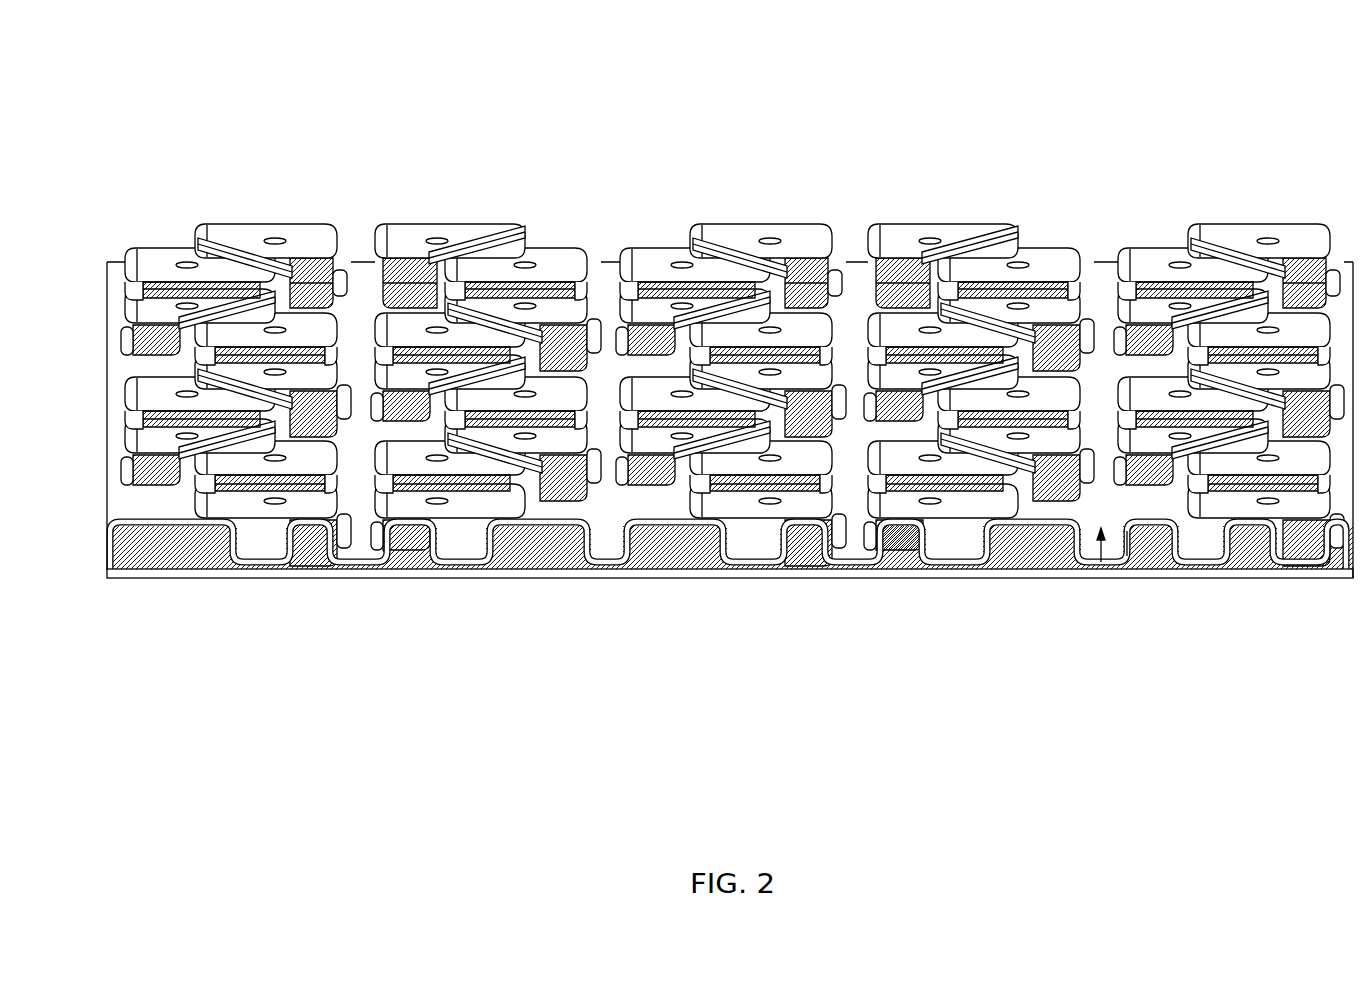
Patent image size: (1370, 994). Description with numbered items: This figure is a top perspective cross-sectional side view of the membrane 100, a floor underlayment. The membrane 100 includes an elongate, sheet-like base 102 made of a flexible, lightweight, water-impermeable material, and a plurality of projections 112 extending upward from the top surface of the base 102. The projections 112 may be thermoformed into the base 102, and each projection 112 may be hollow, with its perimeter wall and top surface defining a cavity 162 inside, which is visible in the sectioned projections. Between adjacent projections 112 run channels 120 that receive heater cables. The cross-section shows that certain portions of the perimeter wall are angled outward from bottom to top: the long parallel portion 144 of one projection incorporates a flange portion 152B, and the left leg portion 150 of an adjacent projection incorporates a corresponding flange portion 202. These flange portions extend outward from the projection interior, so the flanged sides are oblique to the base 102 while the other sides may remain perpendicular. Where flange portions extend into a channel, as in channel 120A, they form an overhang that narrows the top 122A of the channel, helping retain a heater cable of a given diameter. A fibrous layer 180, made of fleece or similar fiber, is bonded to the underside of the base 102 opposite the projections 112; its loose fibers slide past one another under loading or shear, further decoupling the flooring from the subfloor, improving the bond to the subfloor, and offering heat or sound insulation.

The membrane 100 is at (721, 368).
The base 102 is at (602, 261).
The projection 112 is at (889, 228).
The channel 120 is at (359, 241).
The channel 120A is at (1108, 540).
The top 122A is at (1097, 572).
The long parallel portion 144 is at (731, 439).
The flange portion 152B is at (747, 543).
The left leg portion 150 is at (728, 608).
The flange portion 202 is at (612, 546).
The cavity 162 is at (554, 562).
The fibrous layer 180 is at (167, 578).